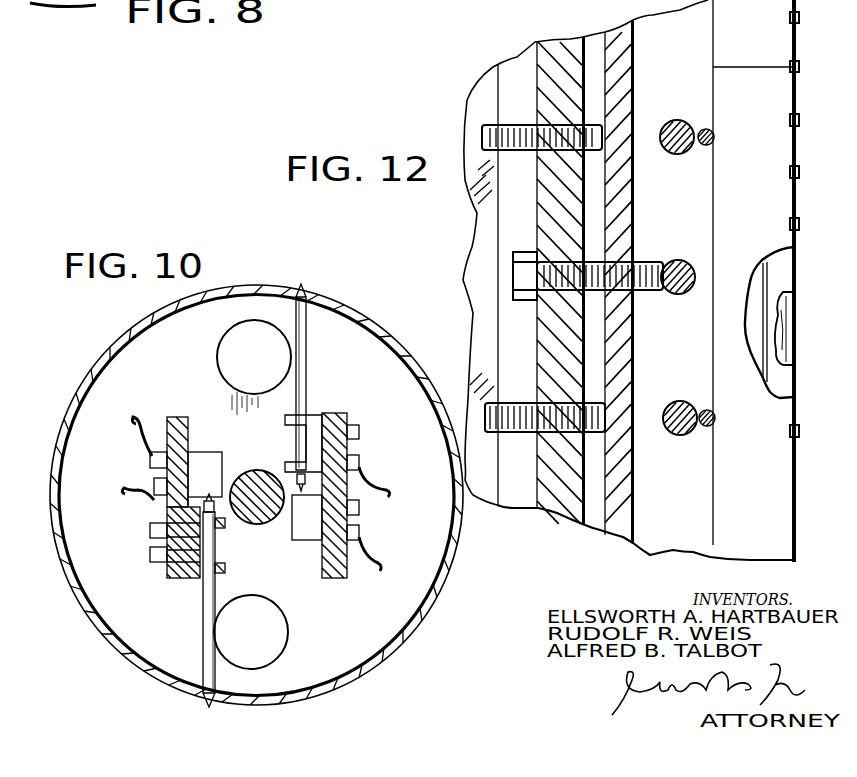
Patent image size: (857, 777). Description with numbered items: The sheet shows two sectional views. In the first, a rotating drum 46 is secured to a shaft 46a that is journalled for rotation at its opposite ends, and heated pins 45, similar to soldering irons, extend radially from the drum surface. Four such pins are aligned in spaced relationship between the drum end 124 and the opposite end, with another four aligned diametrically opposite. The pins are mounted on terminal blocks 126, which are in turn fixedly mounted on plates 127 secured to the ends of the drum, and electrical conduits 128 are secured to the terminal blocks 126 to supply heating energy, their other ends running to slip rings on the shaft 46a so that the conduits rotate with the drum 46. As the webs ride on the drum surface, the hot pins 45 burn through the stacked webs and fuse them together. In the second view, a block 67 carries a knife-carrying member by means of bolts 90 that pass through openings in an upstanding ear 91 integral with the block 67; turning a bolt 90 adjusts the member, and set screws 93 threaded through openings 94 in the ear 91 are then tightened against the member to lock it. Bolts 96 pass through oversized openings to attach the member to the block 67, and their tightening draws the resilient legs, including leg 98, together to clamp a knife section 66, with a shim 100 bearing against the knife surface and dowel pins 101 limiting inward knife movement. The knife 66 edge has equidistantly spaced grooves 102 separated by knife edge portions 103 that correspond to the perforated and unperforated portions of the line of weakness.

In FIG. 10, the heated pins 45 is at (306, 294).
In FIG. 10, the drum 46 is at (105, 358).
In FIG. 10, the shaft 46a is at (255, 478).
In FIG. 10, the end of the drum 124 is at (125, 652).
In FIG. 10, the terminal blocks 126 is at (208, 458).
In FIG. 10, the hatched mounting bar 127 is at (181, 417).
In FIG. 10, the electrical conduits 128 is at (153, 447).
In FIG. 12, the block 67 is at (478, 222).
In FIG. 12, the bolts 90 is at (523, 277).
In FIG. 12, the upstanding ear 91 is at (556, 60).
In FIG. 12, the set screws 93 is at (482, 130).
In FIG. 12, the threaded openings 94 is at (603, 55).
In FIG. 12, the bolts 96 is at (680, 126).
In FIG. 12, the dowel pins 101 is at (705, 146).
In FIG. 12, the grooves 102 is at (797, 67).
In FIG. 12, the knife edge 103 is at (808, 110).
In FIG. 12, the shim 100 is at (778, 262).
In FIG. 12, the leg 98 is at (786, 349).
In FIG. 12, the knife sections 66 is at (783, 470).